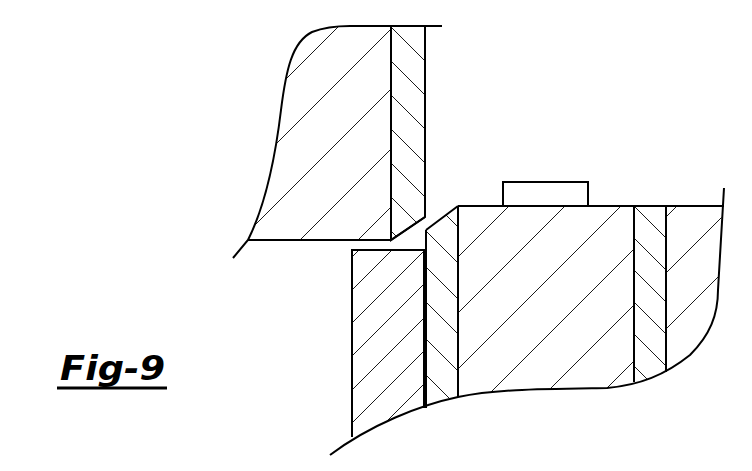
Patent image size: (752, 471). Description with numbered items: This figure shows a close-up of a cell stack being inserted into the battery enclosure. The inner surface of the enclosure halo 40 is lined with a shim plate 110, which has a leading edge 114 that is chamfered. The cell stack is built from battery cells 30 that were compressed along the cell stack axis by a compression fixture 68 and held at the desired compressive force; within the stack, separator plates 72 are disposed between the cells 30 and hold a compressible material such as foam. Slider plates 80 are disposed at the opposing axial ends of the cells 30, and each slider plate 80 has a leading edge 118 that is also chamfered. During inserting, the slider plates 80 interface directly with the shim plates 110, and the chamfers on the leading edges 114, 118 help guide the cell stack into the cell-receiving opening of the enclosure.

The battery cells 30 is at (585, 367).
The enclosure halo 40 is at (313, 143).
The compression fixture 68 is at (352, 347).
The separator plates 72 is at (652, 213).
The slider plates 80 is at (443, 380).
The shim plates 110 is at (425, 73).
The leading edges 114 is at (402, 241).
The leading edge 118 is at (448, 208).